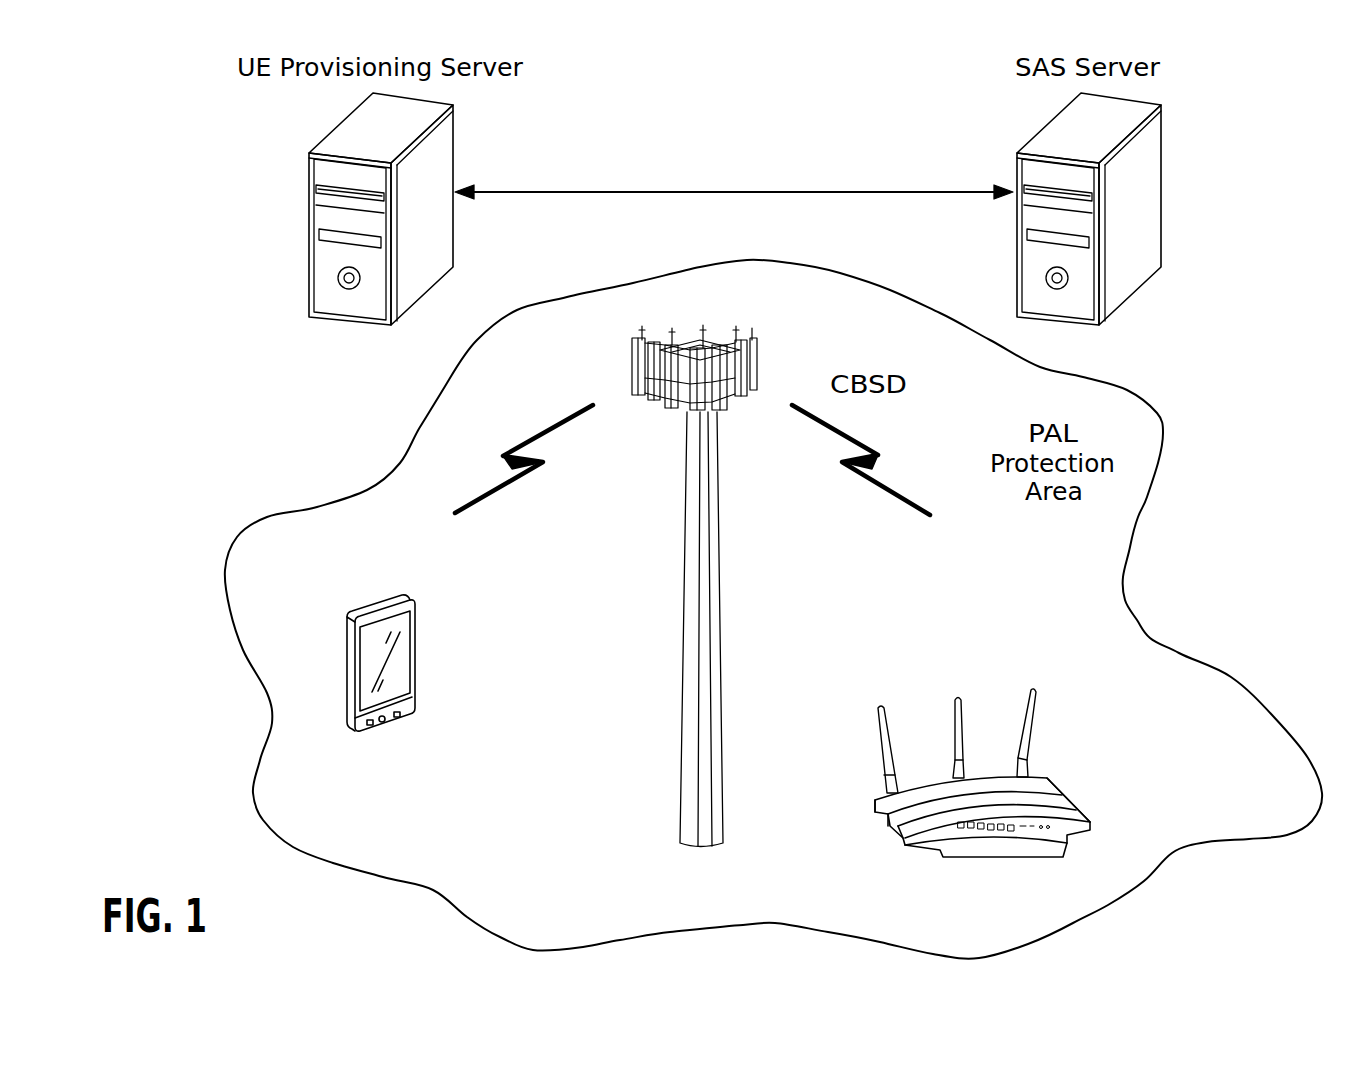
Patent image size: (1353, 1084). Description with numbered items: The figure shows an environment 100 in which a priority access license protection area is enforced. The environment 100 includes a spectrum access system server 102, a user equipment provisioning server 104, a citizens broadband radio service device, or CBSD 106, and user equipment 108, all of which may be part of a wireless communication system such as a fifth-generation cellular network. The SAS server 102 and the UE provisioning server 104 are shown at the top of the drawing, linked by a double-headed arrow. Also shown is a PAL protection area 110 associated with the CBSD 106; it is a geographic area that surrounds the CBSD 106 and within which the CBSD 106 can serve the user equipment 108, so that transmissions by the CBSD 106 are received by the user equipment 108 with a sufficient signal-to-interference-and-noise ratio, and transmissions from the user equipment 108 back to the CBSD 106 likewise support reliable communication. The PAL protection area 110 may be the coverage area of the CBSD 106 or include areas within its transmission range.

The environment 100 is at (158, 199).
The spectrum access system (SAS) server 102 is at (1162, 152).
The user equipment (UE) provisioning server 104 is at (453, 152).
The citizens broadband radio service device (CBSD) 106 is at (755, 357).
The user equipment 108 is at (415, 632).
The priority access license (PAL) protection area (PPA) 110 is at (1138, 517).